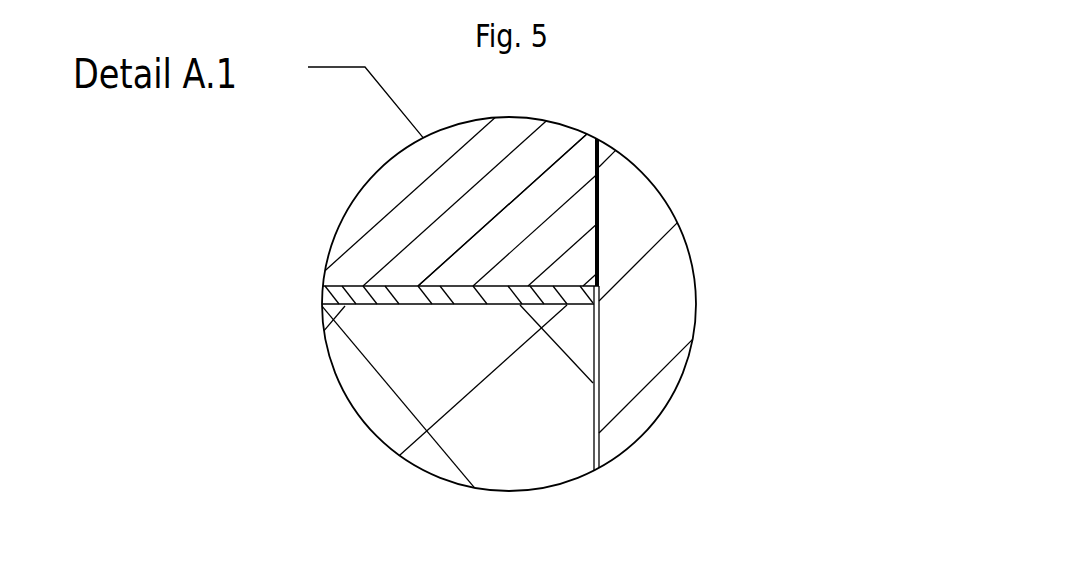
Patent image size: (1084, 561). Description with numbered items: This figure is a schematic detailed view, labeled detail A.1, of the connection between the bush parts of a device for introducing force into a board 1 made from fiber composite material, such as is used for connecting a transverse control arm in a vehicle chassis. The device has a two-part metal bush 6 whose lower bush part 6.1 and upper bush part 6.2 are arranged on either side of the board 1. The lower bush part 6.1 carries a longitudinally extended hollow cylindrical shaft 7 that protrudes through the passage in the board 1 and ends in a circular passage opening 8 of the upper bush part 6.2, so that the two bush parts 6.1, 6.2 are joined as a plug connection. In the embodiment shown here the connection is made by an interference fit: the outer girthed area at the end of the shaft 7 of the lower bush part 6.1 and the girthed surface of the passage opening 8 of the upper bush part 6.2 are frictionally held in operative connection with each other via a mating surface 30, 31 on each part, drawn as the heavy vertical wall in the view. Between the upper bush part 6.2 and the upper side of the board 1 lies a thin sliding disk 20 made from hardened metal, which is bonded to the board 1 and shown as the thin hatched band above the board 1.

The board 1 is at (417, 358).
The two-part metal bush 6 is at (502, 294).
The lower bush part 6.1 is at (757, 310).
The upper bush part 6.2 is at (448, 233).
The hollow cylindrical shaft 7 is at (757, 310).
The passage opening 8 is at (596, 186).
The sliding disk 20 is at (415, 296).
The mating surface 30 is at (744, 200).
The mating surface 31 is at (598, 218).